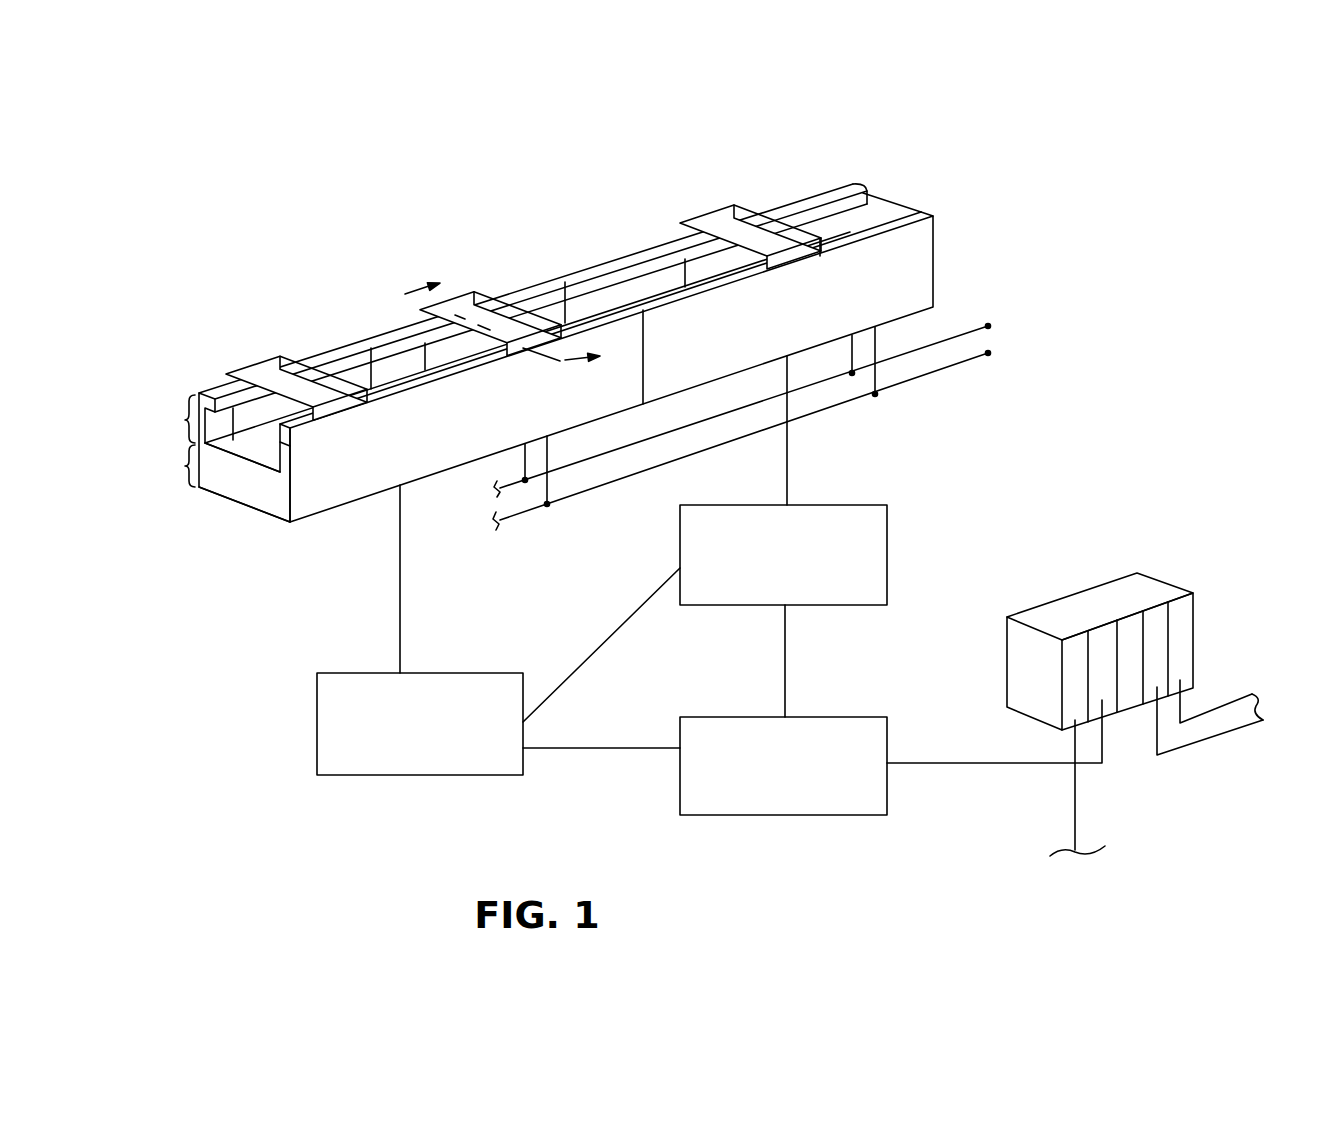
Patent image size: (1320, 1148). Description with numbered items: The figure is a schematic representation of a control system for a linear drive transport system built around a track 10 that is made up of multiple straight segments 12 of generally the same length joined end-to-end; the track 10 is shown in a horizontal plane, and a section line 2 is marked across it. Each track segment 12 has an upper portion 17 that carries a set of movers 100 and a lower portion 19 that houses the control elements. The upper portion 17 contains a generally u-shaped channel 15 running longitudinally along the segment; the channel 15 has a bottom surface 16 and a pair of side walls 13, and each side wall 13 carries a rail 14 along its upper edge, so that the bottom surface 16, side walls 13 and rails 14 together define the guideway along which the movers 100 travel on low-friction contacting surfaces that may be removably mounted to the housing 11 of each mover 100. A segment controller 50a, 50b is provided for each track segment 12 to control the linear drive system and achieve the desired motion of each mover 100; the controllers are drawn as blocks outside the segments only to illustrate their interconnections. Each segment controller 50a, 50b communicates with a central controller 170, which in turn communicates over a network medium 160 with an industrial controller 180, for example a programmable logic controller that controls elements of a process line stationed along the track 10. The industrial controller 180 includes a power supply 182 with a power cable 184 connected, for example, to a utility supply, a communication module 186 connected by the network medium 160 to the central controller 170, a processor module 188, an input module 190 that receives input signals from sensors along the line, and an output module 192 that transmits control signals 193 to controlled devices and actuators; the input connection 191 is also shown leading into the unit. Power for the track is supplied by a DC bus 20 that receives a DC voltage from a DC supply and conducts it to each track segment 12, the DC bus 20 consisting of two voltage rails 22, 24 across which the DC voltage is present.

The track 10 is at (898, 130).
The housing 11 is at (500, 430).
The track segment 12 is at (358, 343).
The side wall 13 is at (217, 432).
The rail 14 is at (340, 356).
The u-shaped channel 15 is at (268, 480).
The bottom surface 16 is at (257, 453).
The upper portion 17 is at (188, 418).
The lower portion 19 is at (188, 465).
The DC bus 20 is at (1045, 295).
The voltage rail 22 is at (960, 332).
The voltage rail 24 is at (955, 368).
The segment controller 50a is at (432, 673).
The segment controller 50b is at (848, 505).
The mover 100 is at (280, 368).
The network medium 160 is at (593, 648).
The central controller 170 is at (710, 815).
The industrial controller 180 is at (1070, 640).
The power supply 182 is at (1060, 600).
The power cable 184 is at (1078, 818).
The communication module 186 is at (1097, 630).
The processor module 188 is at (1130, 623).
The input module 190 is at (1158, 620).
The power supply input bar 191 is at (1202, 741).
The output module 192 is at (1187, 608).
The control signals 193 is at (1222, 707).
The section line 2- 2 is at (515, 318).